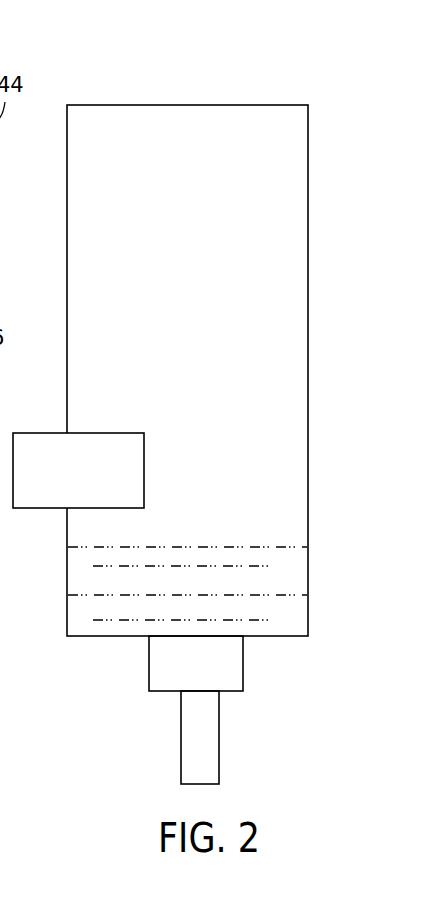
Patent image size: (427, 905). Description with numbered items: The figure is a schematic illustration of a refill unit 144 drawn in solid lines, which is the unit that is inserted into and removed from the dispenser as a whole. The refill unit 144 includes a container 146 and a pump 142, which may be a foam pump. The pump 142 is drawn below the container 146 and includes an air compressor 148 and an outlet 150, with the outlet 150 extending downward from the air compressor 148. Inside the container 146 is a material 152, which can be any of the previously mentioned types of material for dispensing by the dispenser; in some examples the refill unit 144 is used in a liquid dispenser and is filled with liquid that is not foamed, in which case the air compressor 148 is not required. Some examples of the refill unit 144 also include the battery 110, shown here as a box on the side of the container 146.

The battery 110 is at (97, 493).
The pump 142 is at (189, 722).
The refill unit 144 is at (317, 148).
The container 146 is at (308, 595).
The air compressor 148 is at (217, 675).
The outlet 150 is at (232, 737).
The material 152 is at (215, 593).